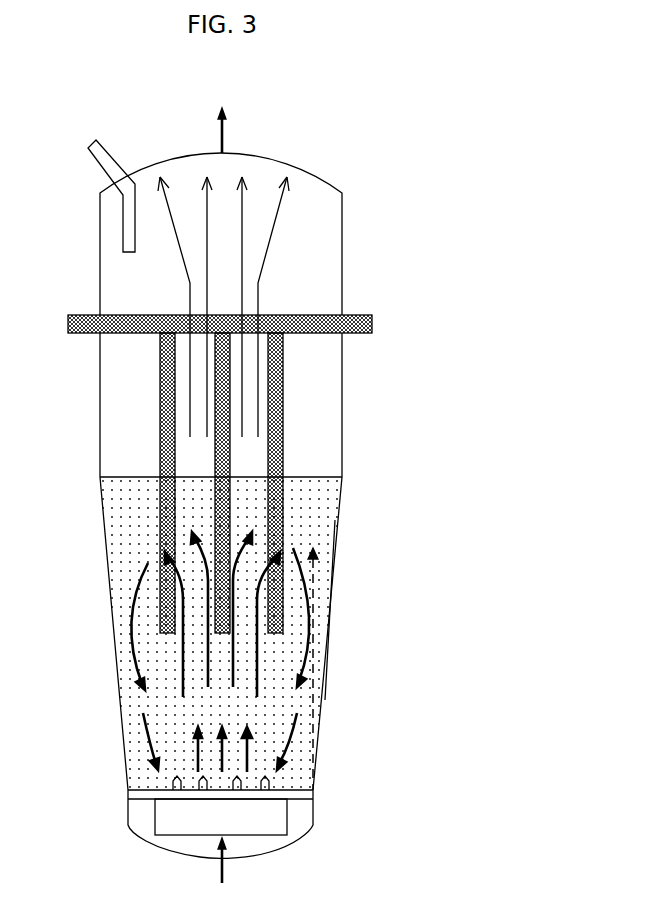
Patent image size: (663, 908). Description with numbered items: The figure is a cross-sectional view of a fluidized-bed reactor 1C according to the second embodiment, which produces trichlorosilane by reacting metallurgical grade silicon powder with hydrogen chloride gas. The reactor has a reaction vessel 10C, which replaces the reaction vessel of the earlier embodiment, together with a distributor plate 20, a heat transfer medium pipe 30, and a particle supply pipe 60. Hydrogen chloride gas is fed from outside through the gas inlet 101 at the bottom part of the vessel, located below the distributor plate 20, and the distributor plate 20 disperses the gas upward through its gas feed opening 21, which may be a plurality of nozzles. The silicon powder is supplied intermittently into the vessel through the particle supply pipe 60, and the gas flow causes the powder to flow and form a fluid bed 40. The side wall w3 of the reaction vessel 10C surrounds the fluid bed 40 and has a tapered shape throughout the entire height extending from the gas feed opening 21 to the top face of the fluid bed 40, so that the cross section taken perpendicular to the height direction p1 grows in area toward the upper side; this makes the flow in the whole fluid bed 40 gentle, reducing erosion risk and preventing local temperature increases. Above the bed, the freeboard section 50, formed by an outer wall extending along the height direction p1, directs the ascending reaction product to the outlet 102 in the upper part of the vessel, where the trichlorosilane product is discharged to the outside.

The fluidized-bed reactor 1C is at (447, 123).
The reaction vessel 10C is at (342, 255).
The freeboard section 50 is at (100, 257).
The particle supply pipe 60 is at (110, 164).
The outlet 102 is at (225, 142).
The gas inlet 101 is at (224, 866).
The fluid bed 40 is at (313, 495).
The heat transfer medium pipe 30 is at (284, 538).
The side wall w3 is at (328, 618).
The height direction p1 is at (323, 688).
The distributor plate 20 is at (288, 790).
The gas feed opening 21 is at (265, 790).